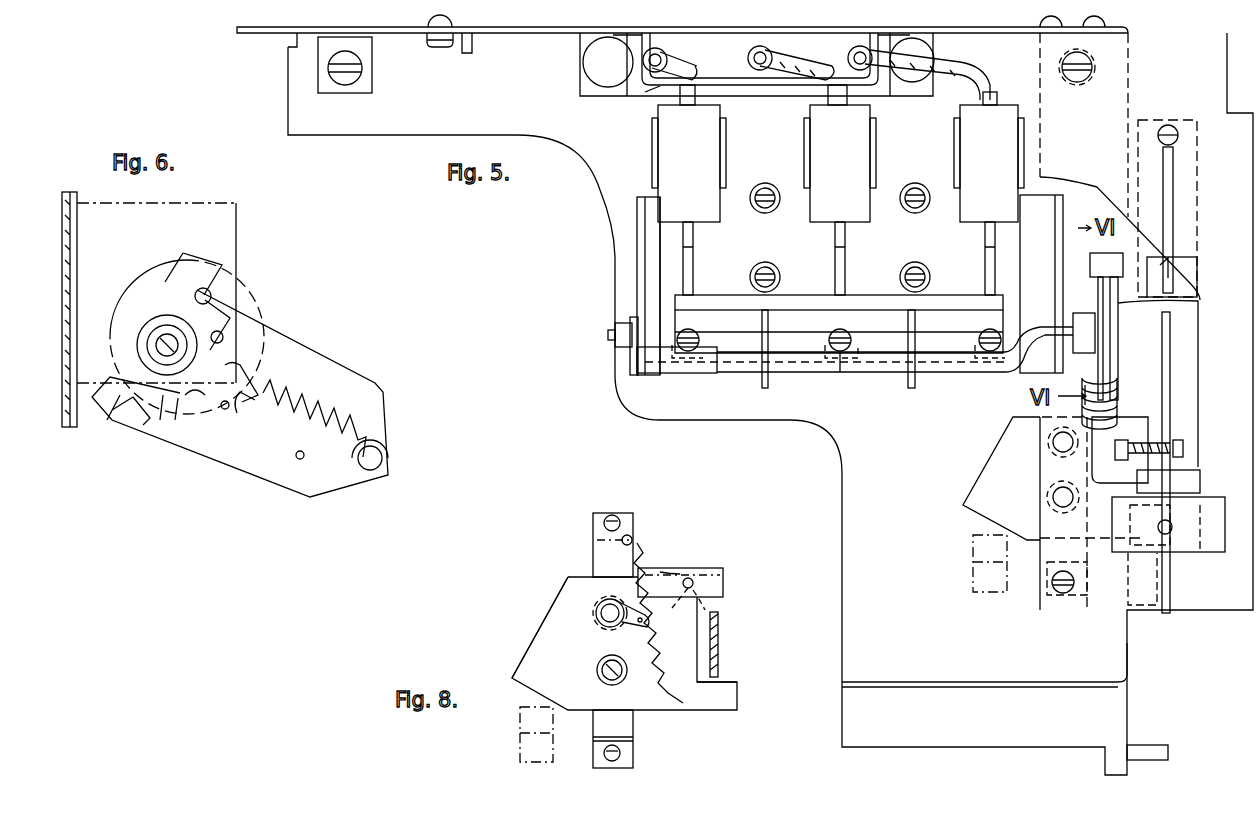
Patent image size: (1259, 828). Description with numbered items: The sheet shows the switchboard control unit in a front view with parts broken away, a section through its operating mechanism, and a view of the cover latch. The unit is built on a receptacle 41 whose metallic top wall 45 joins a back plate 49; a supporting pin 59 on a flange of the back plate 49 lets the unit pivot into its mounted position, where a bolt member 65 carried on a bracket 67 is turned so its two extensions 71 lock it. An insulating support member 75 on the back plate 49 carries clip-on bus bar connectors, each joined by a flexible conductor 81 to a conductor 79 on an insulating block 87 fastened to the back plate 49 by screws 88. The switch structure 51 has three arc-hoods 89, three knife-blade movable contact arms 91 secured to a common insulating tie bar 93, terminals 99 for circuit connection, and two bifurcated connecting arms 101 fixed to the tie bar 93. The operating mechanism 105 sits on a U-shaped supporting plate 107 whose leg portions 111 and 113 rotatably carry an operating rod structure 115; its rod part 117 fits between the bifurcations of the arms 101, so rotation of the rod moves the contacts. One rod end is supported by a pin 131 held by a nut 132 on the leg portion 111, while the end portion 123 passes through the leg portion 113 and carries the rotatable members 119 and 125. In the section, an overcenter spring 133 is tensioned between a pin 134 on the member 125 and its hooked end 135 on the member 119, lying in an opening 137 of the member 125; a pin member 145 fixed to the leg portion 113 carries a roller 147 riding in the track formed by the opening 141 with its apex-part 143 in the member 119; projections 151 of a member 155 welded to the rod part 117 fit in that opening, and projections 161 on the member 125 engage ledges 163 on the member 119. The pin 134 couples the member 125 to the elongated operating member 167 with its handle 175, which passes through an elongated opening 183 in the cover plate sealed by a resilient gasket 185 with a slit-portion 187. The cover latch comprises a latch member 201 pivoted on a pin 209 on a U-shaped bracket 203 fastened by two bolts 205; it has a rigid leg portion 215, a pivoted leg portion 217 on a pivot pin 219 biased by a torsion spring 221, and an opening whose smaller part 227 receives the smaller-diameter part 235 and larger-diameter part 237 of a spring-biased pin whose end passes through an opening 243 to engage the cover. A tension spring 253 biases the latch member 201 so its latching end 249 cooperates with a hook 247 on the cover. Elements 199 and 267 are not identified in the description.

In FIG. 5, the receptacle 41 is at (543, 38).
In FIG. 5, the top wall 45 is at (953, 23).
In FIG. 5, the back plate 49 is at (573, 36).
In FIG. 5, the switch structure 51 is at (750, 152).
In FIG. 5, the supporting pin 59 is at (1162, 747).
In FIG. 5, the bolt member 65 is at (344, 54).
In FIG. 5, the bracket 67 is at (363, 58).
In FIG. 5, the extensions 71 is at (645, 92).
In FIG. 5, the insulating support member 75 is at (778, 54).
In FIG. 5, the conductor 79 is at (995, 98).
In FIG. 5, the flexible conductor 81 is at (669, 72).
In FIG. 5, the insulating block 87 is at (665, 235).
In FIG. 5, the screws 88 is at (768, 262).
In FIG. 5, the insulating arc-hoods 89 is at (658, 120).
In FIG. 5, the movable contact arms 91 is at (693, 276).
In FIG. 5, the insulating tie bar 93 is at (797, 297).
In FIG. 5, the terminals 99 is at (695, 339).
In FIG. 5, the bifurcated connecting arms 101 is at (768, 384).
In FIG. 5, the operating mechanism 105 is at (1023, 302).
In FIG. 5, the U-shaped supporting plate 107 is at (720, 374).
In FIG. 5, the leg portion 111 is at (637, 288).
In FIG. 5, the leg portion 113 is at (1063, 207).
In FIG. 6, the leg portion 113 is at (230, 218).
In FIG. 5, the operating rod structure 115 is at (832, 432).
In FIG. 5, the rod part 117 is at (875, 374).
In FIG. 5, the member 119 is at (1090, 365).
In FIG. 6, the member 119 is at (99, 372).
In FIG. 6, the end portion 123 is at (160, 335).
In FIG. 5, the member 125 is at (1140, 303).
In FIG. 6, the member 125 is at (279, 380).
In FIG. 5, the pin 131 is at (608, 335).
In FIG. 5, the nut 132 is at (615, 345).
In FIG. 5, the overcenter spring 133 is at (1117, 396).
In FIG. 6, the overcenter spring 133 is at (320, 420).
In FIG. 6, the pin 134 is at (384, 452).
In FIG. 6, the spring end 135 is at (245, 378).
In FIG. 6, the opening 137 is at (298, 458).
In FIG. 6, the opening 141 is at (175, 421).
In FIG. 6, the apex-part 143 is at (226, 409).
In FIG. 6, the pin member 145 is at (225, 316).
In FIG. 6, the roller 147 is at (223, 336).
In FIG. 6, the projections 151 is at (208, 300).
In FIG. 5, the member 155 is at (1073, 355).
In FIG. 6, the projections 161 is at (107, 421).
In FIG. 6, the ledges 163 is at (210, 281).
In FIG. 5, the operating member 167 is at (1170, 408).
In FIG. 8, the operating member 167 is at (718, 623).
In FIG. 5, the handle portion 175 is at (1210, 546).
In FIG. 5, the elongated opening 183 is at (1175, 200).
In FIG. 5, the resilient gasket member 185 is at (1183, 283).
In FIG. 5, the slit-portion 187 is at (1165, 265).
In FIG. 6, the notch 199 is at (185, 396).
In FIG. 5, the latch member 201 is at (992, 505).
In FIG. 8, the latch member 201 is at (542, 669).
In FIG. 8, the U-shaped bracket 203 is at (600, 557).
In FIG. 8, the bolts 205 is at (605, 522).
In FIG. 8, the pin 209 is at (600, 676).
In FIG. 8, the leg portion 215 is at (737, 697).
In FIG. 8, the leg portion 217 is at (722, 586).
In FIG. 8, the pivot pin 219 is at (690, 579).
In FIG. 8, the torsion spring 221 is at (678, 572).
In FIG. 8, the smaller part 227 is at (640, 624).
In FIG. 5, the smaller-diameter part 235 is at (1055, 446).
In FIG. 8, the smaller-diameter part 235 is at (601, 615).
In FIG. 8, the larger-diameter part 237 is at (603, 607).
In FIG. 5, the opening 243 is at (1066, 452).
In FIG. 5, the hook 247 is at (990, 592).
In FIG. 8, the hook 247 is at (525, 750).
In FIG. 5, the latching end 249 is at (968, 497).
In FIG. 8, the latching end 249 is at (520, 657).
In FIG. 8, the tension spring 253 is at (672, 680).
In FIG. 5, the contact strip 267 is at (720, 148).